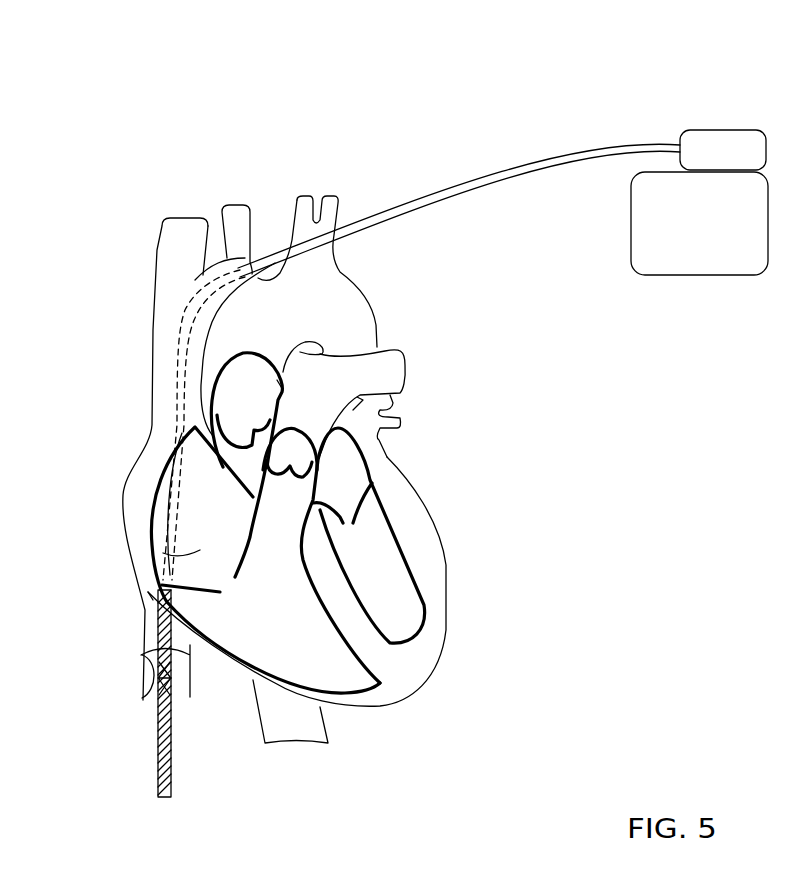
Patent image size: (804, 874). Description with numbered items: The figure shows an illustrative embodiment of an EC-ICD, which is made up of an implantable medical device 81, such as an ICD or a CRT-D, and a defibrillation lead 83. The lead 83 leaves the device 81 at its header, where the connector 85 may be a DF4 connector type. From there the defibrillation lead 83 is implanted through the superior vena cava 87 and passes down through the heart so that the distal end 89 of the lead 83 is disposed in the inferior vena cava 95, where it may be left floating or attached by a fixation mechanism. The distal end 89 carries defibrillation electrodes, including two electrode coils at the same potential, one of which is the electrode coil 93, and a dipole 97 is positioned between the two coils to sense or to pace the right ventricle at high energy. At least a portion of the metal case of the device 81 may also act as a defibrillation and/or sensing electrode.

The implantable medical device 81 is at (717, 290).
The defibrillation lead 83 is at (614, 144).
The connector 85 is at (703, 130).
The superior vena cava 87 is at (153, 303).
The distal end 89 is at (158, 797).
The electrode coil 93 is at (150, 596).
The inferior vena cava 95 is at (138, 663).
The dipole 97 is at (140, 683).